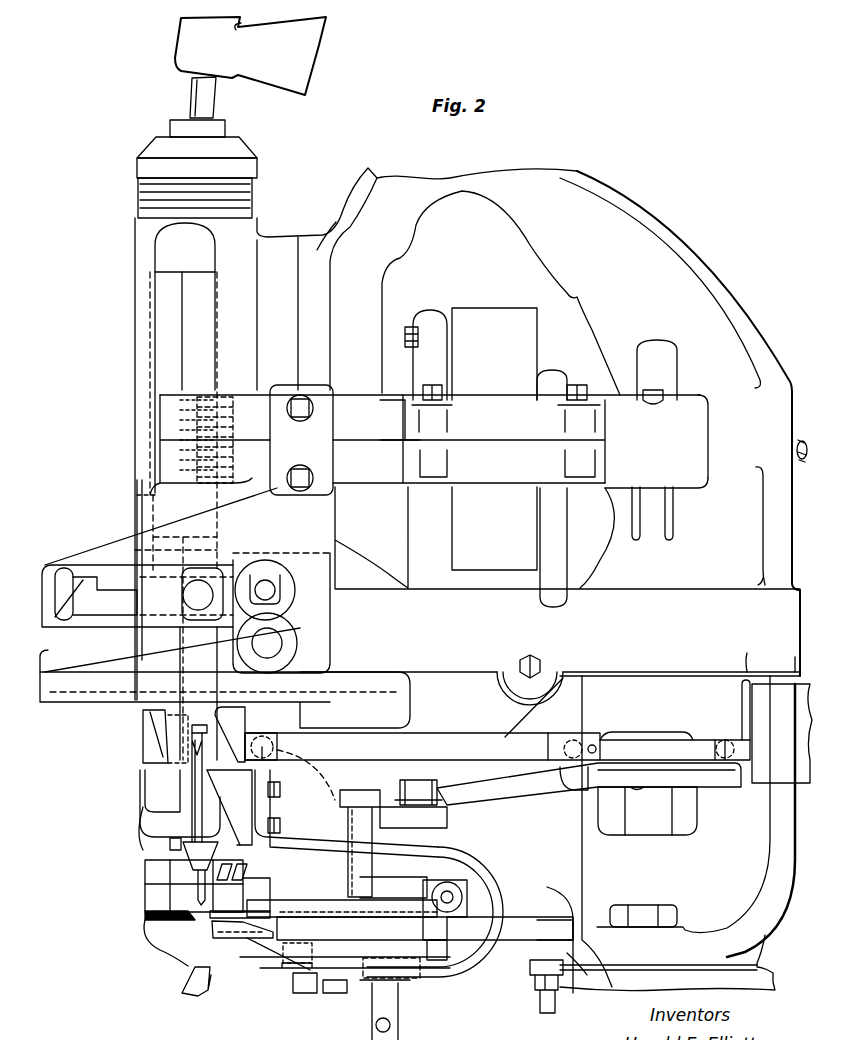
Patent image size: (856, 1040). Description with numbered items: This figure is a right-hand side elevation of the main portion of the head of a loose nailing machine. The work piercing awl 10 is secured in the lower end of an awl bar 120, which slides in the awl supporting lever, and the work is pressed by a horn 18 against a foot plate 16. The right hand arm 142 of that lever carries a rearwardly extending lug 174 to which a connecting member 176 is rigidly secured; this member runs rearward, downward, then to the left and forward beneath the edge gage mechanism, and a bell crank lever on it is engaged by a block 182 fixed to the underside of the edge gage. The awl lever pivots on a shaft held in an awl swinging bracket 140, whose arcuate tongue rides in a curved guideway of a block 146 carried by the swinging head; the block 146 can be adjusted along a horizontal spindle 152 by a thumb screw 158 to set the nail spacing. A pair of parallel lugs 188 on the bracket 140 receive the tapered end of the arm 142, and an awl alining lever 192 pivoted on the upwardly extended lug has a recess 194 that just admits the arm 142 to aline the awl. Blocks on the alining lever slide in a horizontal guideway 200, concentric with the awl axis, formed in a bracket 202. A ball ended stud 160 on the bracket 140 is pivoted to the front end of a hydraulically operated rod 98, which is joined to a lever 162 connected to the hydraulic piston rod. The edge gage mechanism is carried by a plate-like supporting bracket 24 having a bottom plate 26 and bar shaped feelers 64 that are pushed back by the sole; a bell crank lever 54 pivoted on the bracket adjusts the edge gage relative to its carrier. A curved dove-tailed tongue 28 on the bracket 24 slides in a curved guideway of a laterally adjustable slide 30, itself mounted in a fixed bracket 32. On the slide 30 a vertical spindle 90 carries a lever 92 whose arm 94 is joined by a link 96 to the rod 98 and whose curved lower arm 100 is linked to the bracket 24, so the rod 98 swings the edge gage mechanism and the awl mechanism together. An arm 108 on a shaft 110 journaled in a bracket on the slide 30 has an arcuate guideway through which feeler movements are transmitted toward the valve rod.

The work piercing awl 10 is at (147, 885).
The foot plate 16 is at (150, 915).
The horn 18 is at (190, 985).
The supporting bracket 24 is at (310, 970).
The bottom plate 26 is at (327, 990).
The dove-tailed guiding tongue 28 is at (290, 884).
The slide 30 is at (293, 903).
The fixed bracket 32 is at (248, 882).
The bell crank lever 54 is at (573, 920).
The feeler 64 is at (230, 940).
The vertical spindle 90 is at (306, 775).
The lever 92 is at (343, 838).
The arm 94 is at (447, 822).
The link 96 is at (500, 783).
The hydraulically operated rod 98 is at (445, 745).
The curved lower arm 100 is at (385, 929).
The arm 108 is at (398, 1001).
The shaft 110 is at (390, 1025).
The awl bar 120 is at (192, 850).
The awl swinging bracket 140 is at (405, 718).
The arm 142 is at (200, 773).
The block 146 is at (355, 668).
The horizontal spindle 152 is at (292, 640).
The thumb screw 158 is at (267, 570).
The ball ended stud 160 is at (278, 750).
The lever 162 is at (717, 783).
The lug 174 is at (245, 813).
The connecting member 176 is at (425, 873).
The block 182 is at (293, 967).
The lugs 188 is at (246, 720).
The awl alining lever 192 is at (190, 663).
The recess 194 is at (167, 727).
The horizontal guideway 200 is at (155, 569).
The bracket 202 is at (323, 518).